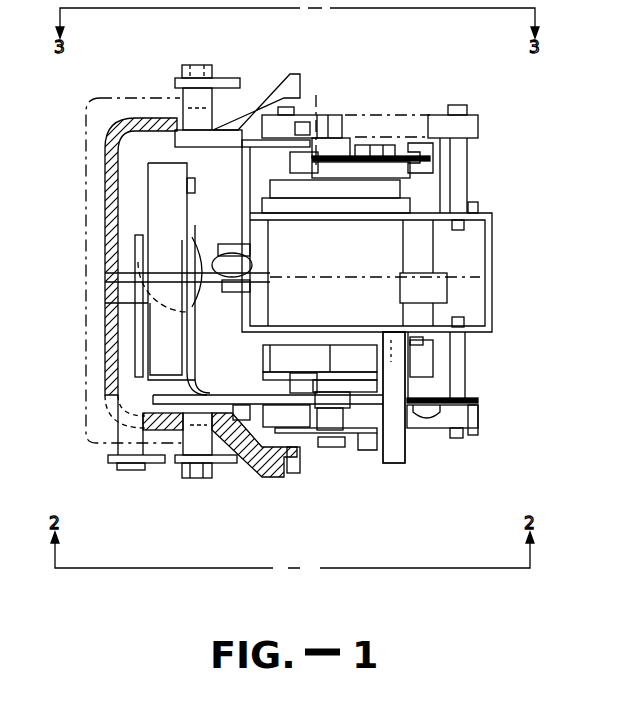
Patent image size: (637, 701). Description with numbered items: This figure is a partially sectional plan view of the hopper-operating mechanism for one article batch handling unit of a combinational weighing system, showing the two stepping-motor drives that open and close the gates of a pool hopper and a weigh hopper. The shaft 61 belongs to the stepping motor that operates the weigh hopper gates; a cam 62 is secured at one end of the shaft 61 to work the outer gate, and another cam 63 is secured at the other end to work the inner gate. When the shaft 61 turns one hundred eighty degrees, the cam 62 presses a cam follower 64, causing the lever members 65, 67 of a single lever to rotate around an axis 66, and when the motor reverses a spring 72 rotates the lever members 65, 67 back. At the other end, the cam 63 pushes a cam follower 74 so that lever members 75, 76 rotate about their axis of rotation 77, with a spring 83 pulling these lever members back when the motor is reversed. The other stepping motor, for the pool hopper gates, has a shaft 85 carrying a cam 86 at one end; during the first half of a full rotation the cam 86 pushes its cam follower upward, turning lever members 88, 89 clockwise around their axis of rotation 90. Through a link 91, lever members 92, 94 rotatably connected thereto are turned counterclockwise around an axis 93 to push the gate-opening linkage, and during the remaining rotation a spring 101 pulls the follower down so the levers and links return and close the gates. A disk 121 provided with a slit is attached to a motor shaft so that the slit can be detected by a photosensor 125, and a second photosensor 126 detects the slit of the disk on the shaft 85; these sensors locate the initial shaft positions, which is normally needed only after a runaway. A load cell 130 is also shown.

The shaft 61 is at (333, 115).
The cam 62 is at (335, 378).
The cam 63 is at (340, 163).
The cam follower 64 is at (292, 380).
The lever member 65 is at (228, 400).
The axis 66 is at (197, 465).
The lever member 67 is at (227, 467).
The spring 72 is at (423, 425).
The cam follower 74 is at (302, 163).
The lever member 75 is at (252, 144).
The lever member 76 is at (228, 83).
The axis of rotation 77 is at (192, 95).
The spring 83 is at (415, 125).
The shaft 85 is at (342, 378).
The cam 86 is at (412, 384).
The lever member 88 is at (440, 410).
The lever member 89 is at (267, 280).
The axis of rotation 90 is at (427, 377).
The link 91 is at (208, 243).
The lever member 92 is at (168, 263).
The axis 93 is at (123, 372).
The lever member 94 is at (138, 465).
The spring 101 is at (430, 412).
The disk 121 is at (352, 440).
The photosensor 125 is at (363, 447).
The photosensor 126 is at (427, 148).
The load cell 130 is at (160, 340).